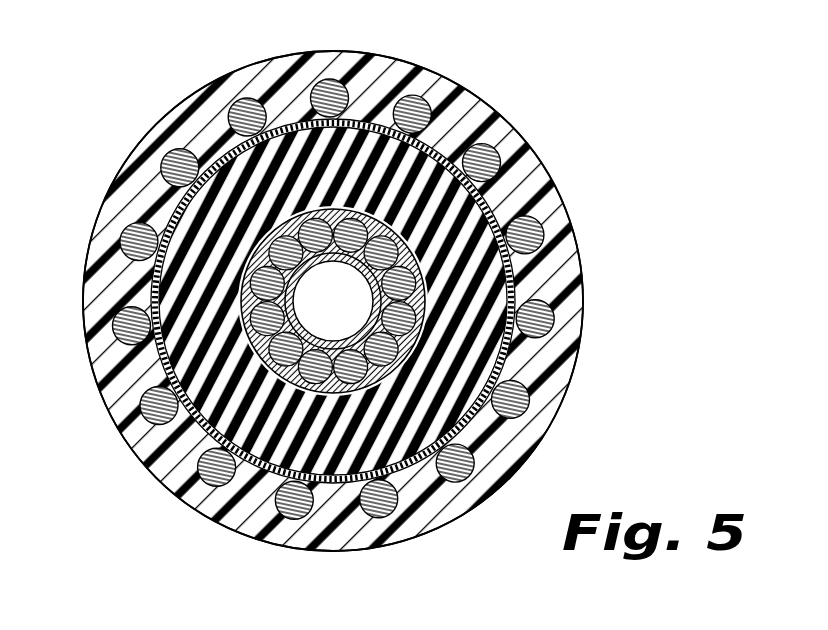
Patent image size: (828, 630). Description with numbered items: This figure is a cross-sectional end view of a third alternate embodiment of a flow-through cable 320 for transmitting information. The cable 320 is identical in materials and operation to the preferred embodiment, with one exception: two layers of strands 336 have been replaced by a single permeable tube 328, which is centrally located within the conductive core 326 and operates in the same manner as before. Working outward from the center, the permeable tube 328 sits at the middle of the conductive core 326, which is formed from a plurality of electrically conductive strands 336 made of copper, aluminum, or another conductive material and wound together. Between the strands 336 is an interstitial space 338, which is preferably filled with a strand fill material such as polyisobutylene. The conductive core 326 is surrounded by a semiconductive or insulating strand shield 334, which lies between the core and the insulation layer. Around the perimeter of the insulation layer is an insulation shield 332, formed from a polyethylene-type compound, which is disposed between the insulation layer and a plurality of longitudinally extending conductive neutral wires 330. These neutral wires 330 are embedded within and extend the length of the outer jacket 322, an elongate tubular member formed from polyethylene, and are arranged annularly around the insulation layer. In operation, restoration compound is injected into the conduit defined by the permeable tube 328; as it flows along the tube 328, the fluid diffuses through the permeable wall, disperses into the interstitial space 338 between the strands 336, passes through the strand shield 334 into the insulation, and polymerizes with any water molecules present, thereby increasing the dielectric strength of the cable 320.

The cable 320 is at (522, 106).
The jacket 322 is at (397, 52).
The conductive core 326 is at (410, 248).
The permeable tube 328 is at (321, 393).
The conductive neutral wires 330 is at (127, 290).
The insulation shield 332 is at (232, 152).
The strand shield 334 is at (375, 332).
The strands 336 is at (166, 452).
The interstitial space 338 is at (282, 372).